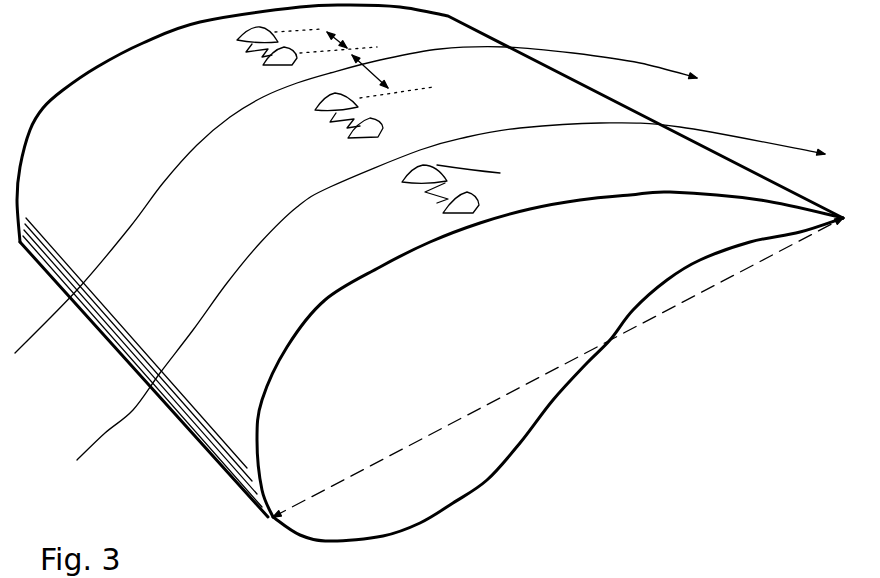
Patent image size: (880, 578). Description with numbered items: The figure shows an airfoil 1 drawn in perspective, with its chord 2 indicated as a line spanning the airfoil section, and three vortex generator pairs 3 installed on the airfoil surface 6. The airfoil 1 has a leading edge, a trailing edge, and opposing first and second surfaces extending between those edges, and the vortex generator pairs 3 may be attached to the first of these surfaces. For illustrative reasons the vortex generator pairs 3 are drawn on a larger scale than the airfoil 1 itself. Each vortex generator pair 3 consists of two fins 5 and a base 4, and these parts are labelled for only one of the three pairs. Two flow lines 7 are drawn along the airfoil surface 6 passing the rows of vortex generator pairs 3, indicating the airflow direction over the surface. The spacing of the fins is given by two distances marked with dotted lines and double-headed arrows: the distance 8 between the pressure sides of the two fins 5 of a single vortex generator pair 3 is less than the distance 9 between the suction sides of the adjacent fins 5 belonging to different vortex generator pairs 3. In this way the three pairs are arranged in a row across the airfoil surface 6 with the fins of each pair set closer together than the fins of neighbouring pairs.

The airfoil 1 is at (519, 439).
The chord 2 is at (450, 425).
The vortex generator pair 3 is at (332, 144).
The base 4 is at (427, 200).
The fin 5 is at (467, 192).
The airfoil surface 6 is at (108, 74).
The flow streamline 7 is at (420, 253).
The distance between pressure sides of fins 8 is at (337, 40).
The distance between suction sides of adjacent fins 9 is at (380, 78).